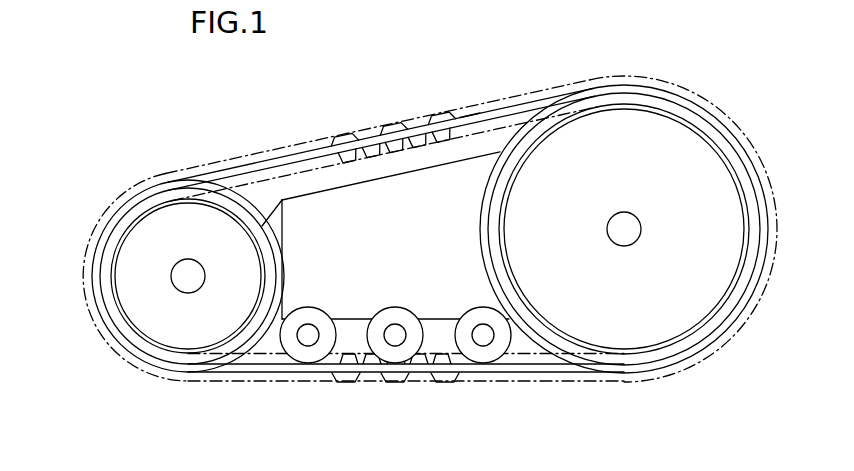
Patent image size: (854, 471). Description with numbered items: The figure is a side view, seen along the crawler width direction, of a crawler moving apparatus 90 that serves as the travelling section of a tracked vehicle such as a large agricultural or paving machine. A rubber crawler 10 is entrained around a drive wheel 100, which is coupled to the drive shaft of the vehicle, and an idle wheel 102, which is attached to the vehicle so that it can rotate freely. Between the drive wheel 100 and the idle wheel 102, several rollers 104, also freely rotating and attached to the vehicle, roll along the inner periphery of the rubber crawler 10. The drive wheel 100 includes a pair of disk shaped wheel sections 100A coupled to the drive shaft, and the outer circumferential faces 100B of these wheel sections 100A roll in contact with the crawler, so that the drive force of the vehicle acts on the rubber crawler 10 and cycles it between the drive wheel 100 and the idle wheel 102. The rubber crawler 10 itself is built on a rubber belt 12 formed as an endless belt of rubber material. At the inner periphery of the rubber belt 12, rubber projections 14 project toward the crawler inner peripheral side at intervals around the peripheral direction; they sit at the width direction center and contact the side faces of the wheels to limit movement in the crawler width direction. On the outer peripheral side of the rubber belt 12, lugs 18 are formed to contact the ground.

The crawler moving apparatus 90 is at (131, 72).
The rubber crawler 10 is at (572, 86).
The rubber belt 12 is at (468, 114).
The rubber projections 14 is at (338, 163).
The lugs 18 is at (389, 118).
The drive wheel 100 is at (480, 202).
The wheel sections 100A is at (662, 132).
The outer circumferential faces 100B is at (535, 335).
The idle wheel 102 is at (272, 232).
The rollers 104 is at (313, 307).